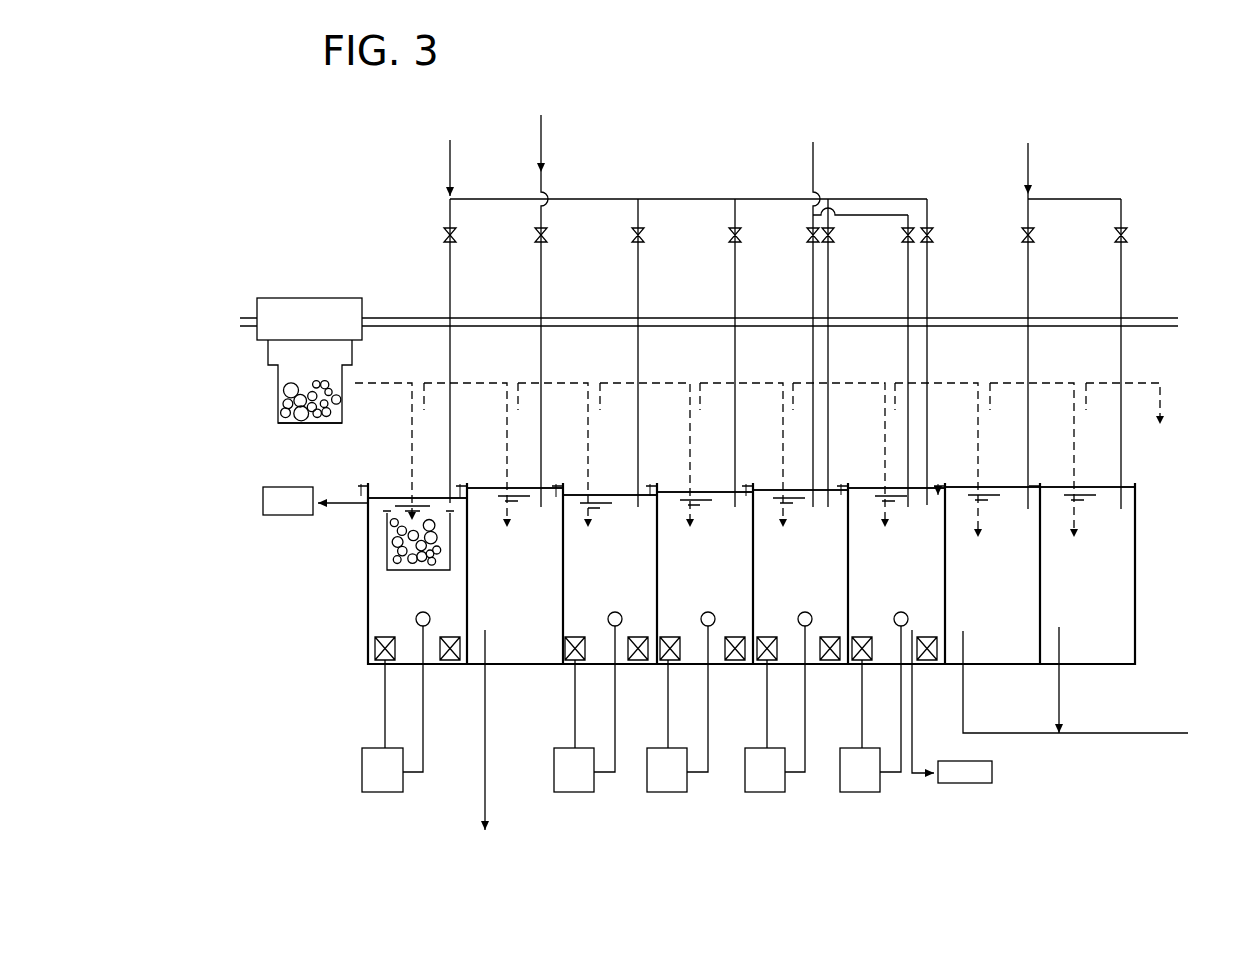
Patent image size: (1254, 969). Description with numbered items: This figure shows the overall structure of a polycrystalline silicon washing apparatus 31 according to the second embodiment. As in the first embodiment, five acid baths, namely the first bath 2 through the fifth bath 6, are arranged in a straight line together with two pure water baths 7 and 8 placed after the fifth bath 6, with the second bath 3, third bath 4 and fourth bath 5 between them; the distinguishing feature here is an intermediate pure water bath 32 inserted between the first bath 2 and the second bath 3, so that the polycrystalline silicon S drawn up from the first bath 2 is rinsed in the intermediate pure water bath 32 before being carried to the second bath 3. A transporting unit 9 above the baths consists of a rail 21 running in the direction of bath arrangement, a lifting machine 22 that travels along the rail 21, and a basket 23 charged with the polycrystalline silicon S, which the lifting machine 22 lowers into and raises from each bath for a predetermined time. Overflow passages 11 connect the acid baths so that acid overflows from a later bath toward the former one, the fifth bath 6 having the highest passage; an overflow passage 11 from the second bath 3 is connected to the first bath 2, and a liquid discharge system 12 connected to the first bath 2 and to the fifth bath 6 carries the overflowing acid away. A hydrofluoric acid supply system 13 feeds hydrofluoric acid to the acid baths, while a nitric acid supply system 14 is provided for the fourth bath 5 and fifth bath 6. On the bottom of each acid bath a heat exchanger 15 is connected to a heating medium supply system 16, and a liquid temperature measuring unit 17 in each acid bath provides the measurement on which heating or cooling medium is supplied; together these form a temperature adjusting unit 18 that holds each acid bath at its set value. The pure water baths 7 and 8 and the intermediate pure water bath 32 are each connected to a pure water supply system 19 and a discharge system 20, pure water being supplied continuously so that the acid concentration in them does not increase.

The first bath 2 is at (397, 496).
The intermediate pure water bath 32 is at (490, 496).
The second bath 3 is at (614, 496).
The third bath 4 is at (715, 492).
The fourth bath 5 is at (796, 490).
The fifth bath 6 is at (874, 488).
The pure water bath 7 is at (1007, 485).
The pure water bath 8 is at (1104, 485).
The transporting unit 9 is at (304, 310).
The overflow passage 11 is at (378, 484).
The liquid discharge system 12 is at (272, 510).
The hydrofluoric acid supply system 13 is at (452, 152).
The nitric acid supply system 14 is at (811, 150).
The heat exchanger 15 is at (384, 666).
The heating medium supply system 16 is at (430, 615).
The liquid temperature measuring unit 17 is at (378, 792).
The temperature adjusting unit 18 is at (350, 746).
The pure water supply system 19 is at (545, 129).
The discharge system 20 is at (483, 775).
The rail 21 is at (1165, 318).
The lifting machine 22 is at (297, 298).
The basket 23 is at (279, 390).
The polycrystalline silicon washing apparatus 31 is at (1168, 214).
The polycrystalline silicon S is at (290, 408).